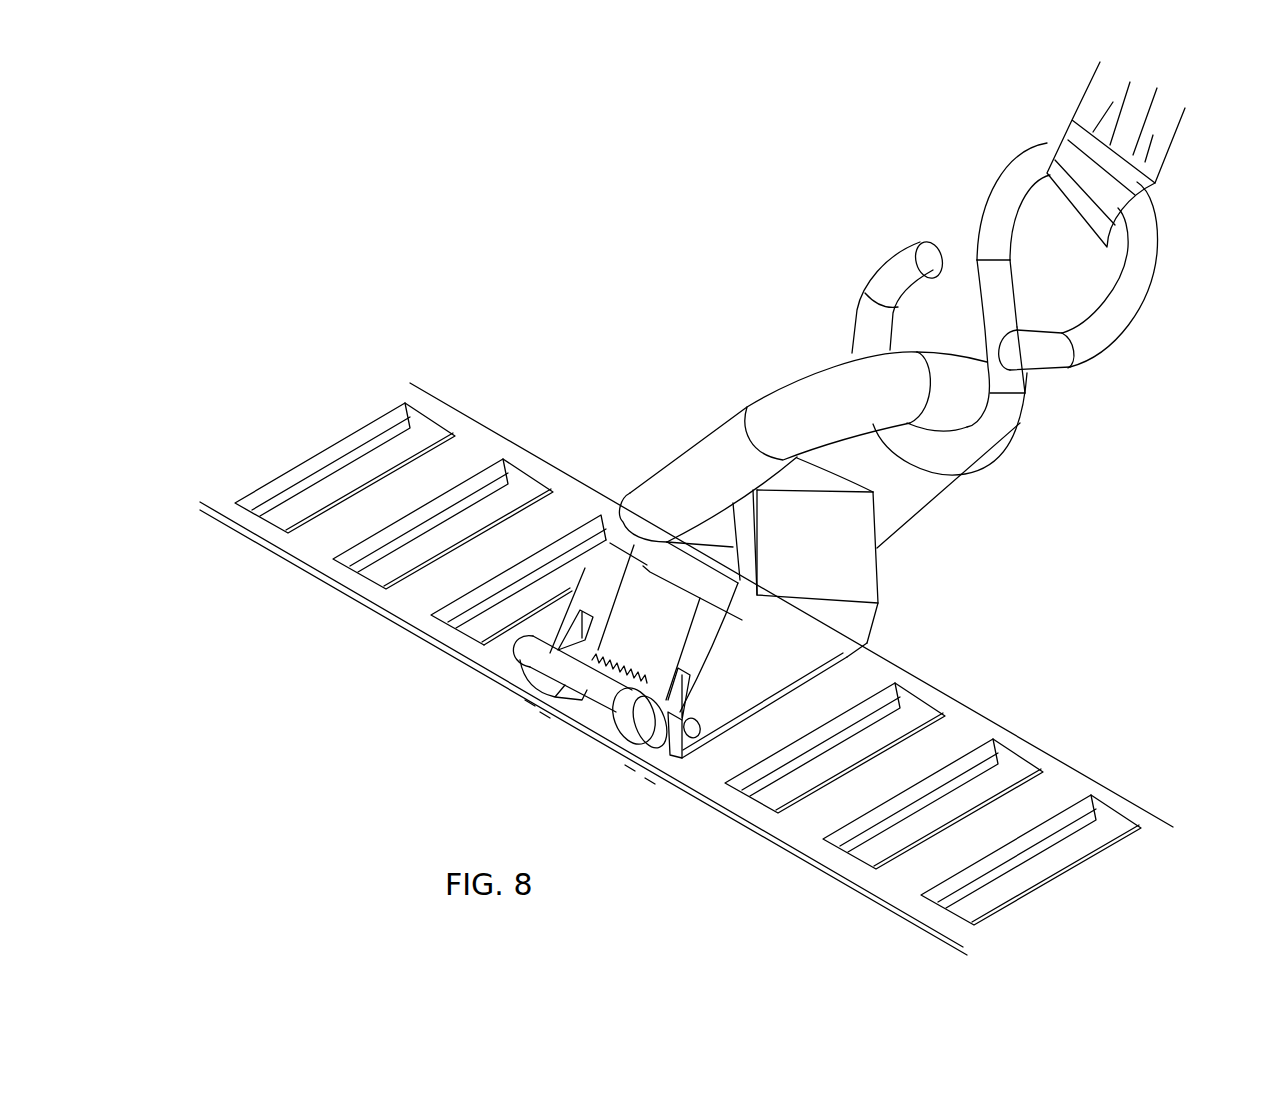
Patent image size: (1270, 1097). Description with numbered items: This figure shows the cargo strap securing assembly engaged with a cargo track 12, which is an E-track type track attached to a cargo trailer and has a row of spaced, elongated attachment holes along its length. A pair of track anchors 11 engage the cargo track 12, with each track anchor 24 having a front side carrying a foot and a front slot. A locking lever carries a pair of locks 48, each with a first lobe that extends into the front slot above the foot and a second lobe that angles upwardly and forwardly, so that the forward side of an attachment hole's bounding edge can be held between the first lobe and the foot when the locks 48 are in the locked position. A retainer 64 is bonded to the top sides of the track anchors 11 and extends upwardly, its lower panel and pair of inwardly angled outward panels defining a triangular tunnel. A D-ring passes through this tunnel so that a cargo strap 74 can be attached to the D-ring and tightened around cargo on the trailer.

The cargo track 12 is at (433, 397).
The track anchor 24 is at (610, 570).
The track anchor 11 is at (742, 678).
The lock 48 is at (528, 650).
The retainer 64 is at (838, 552).
The cargo strap 74 is at (1158, 155).